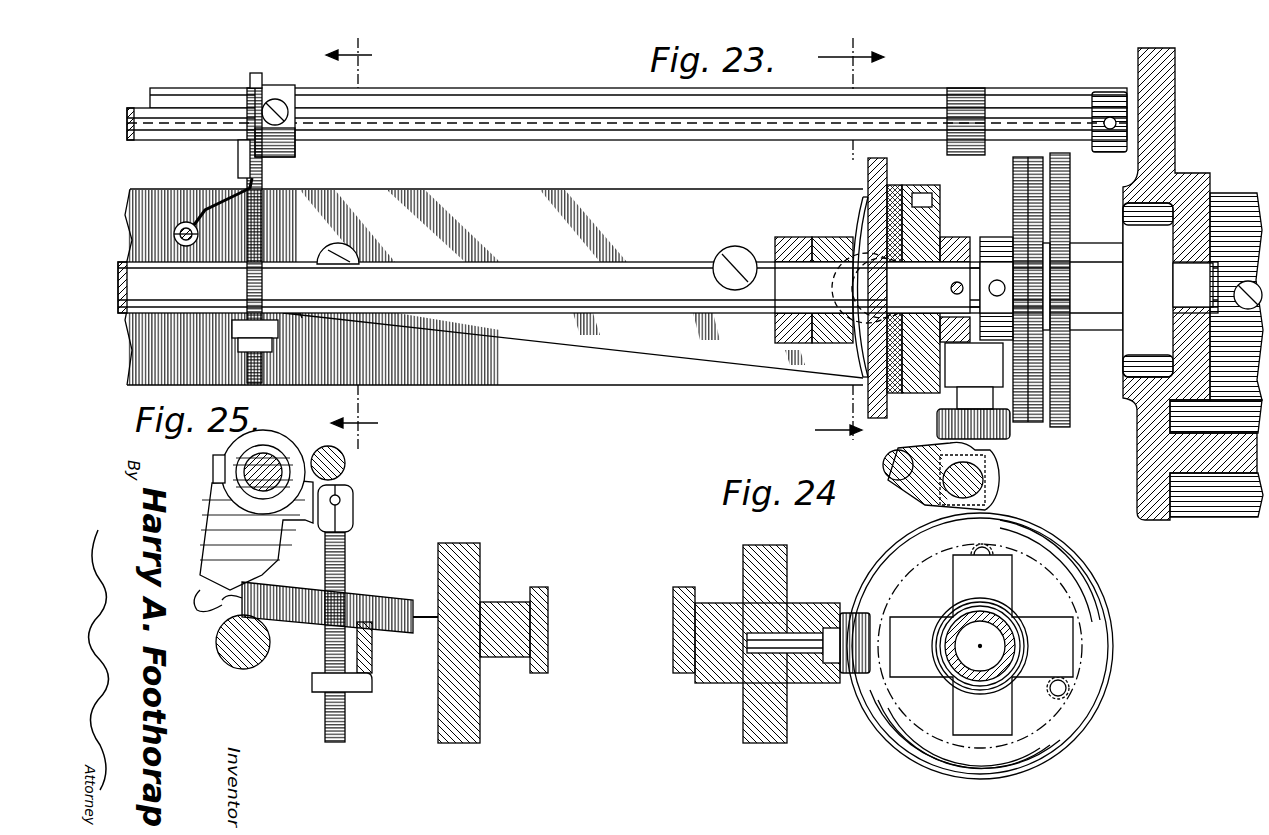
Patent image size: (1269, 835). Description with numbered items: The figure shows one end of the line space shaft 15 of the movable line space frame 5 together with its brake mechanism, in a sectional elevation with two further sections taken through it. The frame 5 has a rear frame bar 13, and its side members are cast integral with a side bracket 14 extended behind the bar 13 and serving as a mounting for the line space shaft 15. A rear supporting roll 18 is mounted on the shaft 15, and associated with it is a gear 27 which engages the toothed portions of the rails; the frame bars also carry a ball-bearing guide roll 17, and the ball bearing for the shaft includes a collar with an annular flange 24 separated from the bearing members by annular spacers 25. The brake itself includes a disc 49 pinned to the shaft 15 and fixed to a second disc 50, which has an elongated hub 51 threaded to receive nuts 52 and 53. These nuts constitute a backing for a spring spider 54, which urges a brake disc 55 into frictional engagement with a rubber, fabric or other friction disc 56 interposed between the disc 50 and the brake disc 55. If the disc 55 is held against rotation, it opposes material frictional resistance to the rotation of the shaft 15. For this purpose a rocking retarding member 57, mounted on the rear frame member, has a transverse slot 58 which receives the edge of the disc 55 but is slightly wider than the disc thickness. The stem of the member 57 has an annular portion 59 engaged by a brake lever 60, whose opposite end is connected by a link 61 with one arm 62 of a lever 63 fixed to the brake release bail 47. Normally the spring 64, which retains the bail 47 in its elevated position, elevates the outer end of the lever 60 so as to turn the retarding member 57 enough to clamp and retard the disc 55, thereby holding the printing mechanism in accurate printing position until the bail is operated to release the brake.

In FIG. 23, the line space frame 5 is at (1228, 452).
In FIG. 23, the rear frame bar 13 is at (452, 200).
In FIG. 24, the rear frame bar 13 is at (745, 556).
In FIG. 25, the rear frame bar 13 is at (483, 552).
In FIG. 23, the side bracket 14 is at (1160, 136).
In FIG. 23, the line space shaft 15 is at (546, 265).
In FIG. 23, the guide roll 17 is at (1003, 434).
In FIG. 23, the rear supporting roll 18 is at (1015, 184).
In FIG. 23, the annular flange 24 is at (863, 241).
In FIG. 23, the annular spacer 25 is at (369, 244).
In FIG. 23, the gear 27 is at (1068, 190).
In FIG. 23, the brake release bail 47 is at (418, 94).
In FIG. 24, the brake release bail 47 is at (890, 480).
In FIG. 23, the disc 49 is at (948, 400).
In FIG. 23, the second disc 50 is at (926, 398).
In FIG. 23, the elongated hub 51 is at (775, 323).
In FIG. 23, the nut 52 is at (787, 238).
In FIG. 23, the nut 53 is at (825, 238).
In FIG. 23, the spring spider 54 is at (858, 214).
In FIG. 24, the spring spider 54 is at (955, 590).
In FIG. 23, the brake disc 55 is at (888, 175).
In FIG. 24, the brake disc 55 is at (1050, 562).
In FIG. 23, the friction disc 56 is at (905, 192).
In FIG. 24, the rocking retarding member 57 is at (850, 690).
In FIG. 23, the transverse slot 58 is at (838, 291).
In FIG. 24, the annular portion 59 is at (828, 668).
In FIG. 23, the brake lever 60 is at (652, 345).
In FIG. 25, the brake lever 60 is at (373, 662).
In FIG. 23, the link 61 is at (264, 210).
In FIG. 25, the link 61 is at (348, 580).
In FIG. 25, the arm 62 is at (318, 492).
In FIG. 23, the lever 63 is at (238, 188).
In FIG. 25, the lever 63 is at (270, 525).
In FIG. 23, the spring 64 is at (175, 238).
In FIG. 25, the spring 64 is at (393, 600).